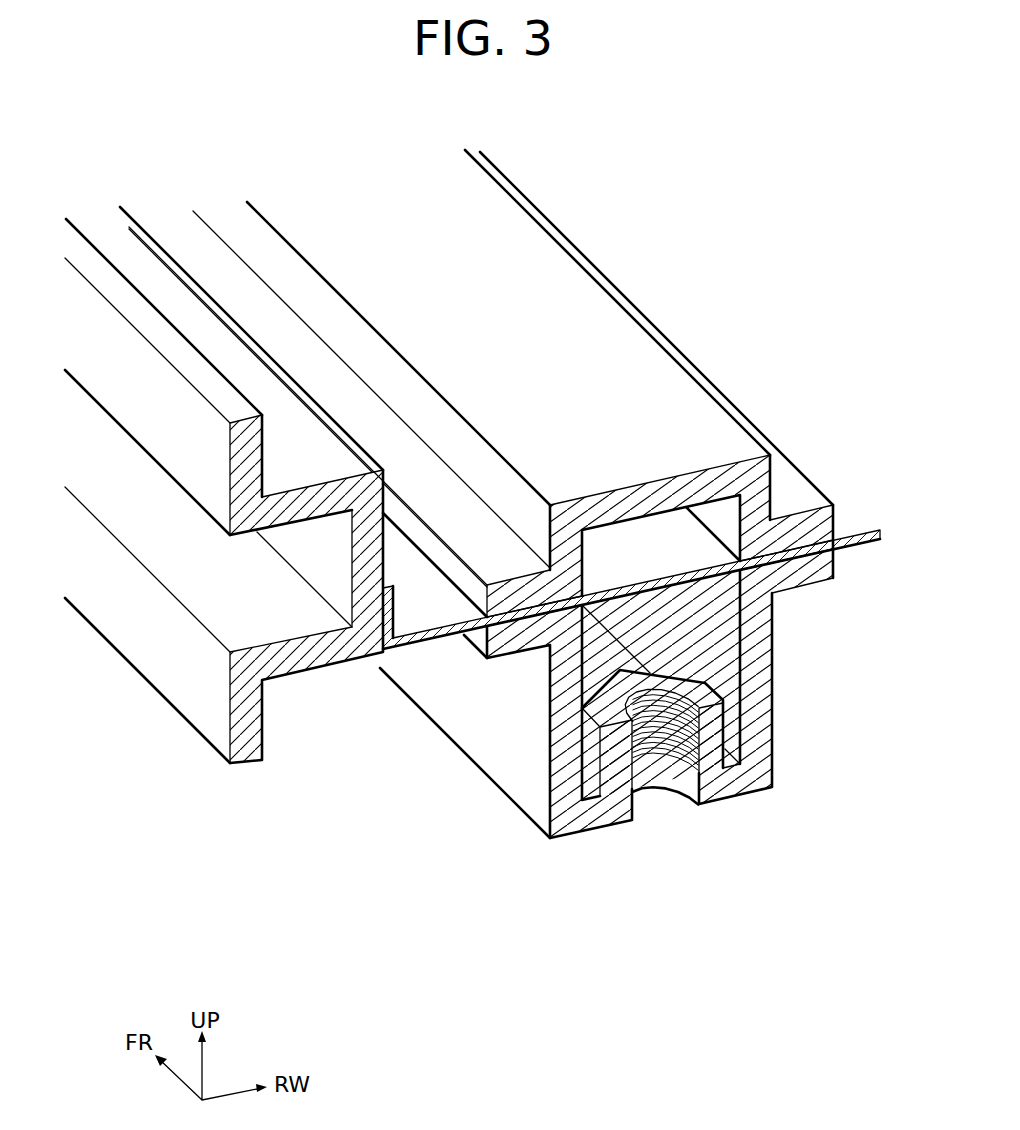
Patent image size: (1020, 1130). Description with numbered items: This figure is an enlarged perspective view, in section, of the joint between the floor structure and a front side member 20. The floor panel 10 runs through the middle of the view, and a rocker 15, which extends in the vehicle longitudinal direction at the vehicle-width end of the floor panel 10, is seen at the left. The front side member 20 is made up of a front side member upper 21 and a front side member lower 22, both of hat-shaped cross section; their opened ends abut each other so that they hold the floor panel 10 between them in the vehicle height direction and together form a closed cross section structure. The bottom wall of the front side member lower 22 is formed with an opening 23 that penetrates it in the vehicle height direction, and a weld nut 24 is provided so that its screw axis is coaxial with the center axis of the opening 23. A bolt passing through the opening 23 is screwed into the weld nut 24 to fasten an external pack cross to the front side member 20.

The floor panel 10 is at (441, 640).
The rocker 15 is at (247, 767).
The front side member 20 is at (482, 516).
The front side member upper 21 is at (703, 480).
The front side member lower 22 is at (607, 716).
The opening 23 is at (670, 778).
The weld nut 24 is at (707, 692).